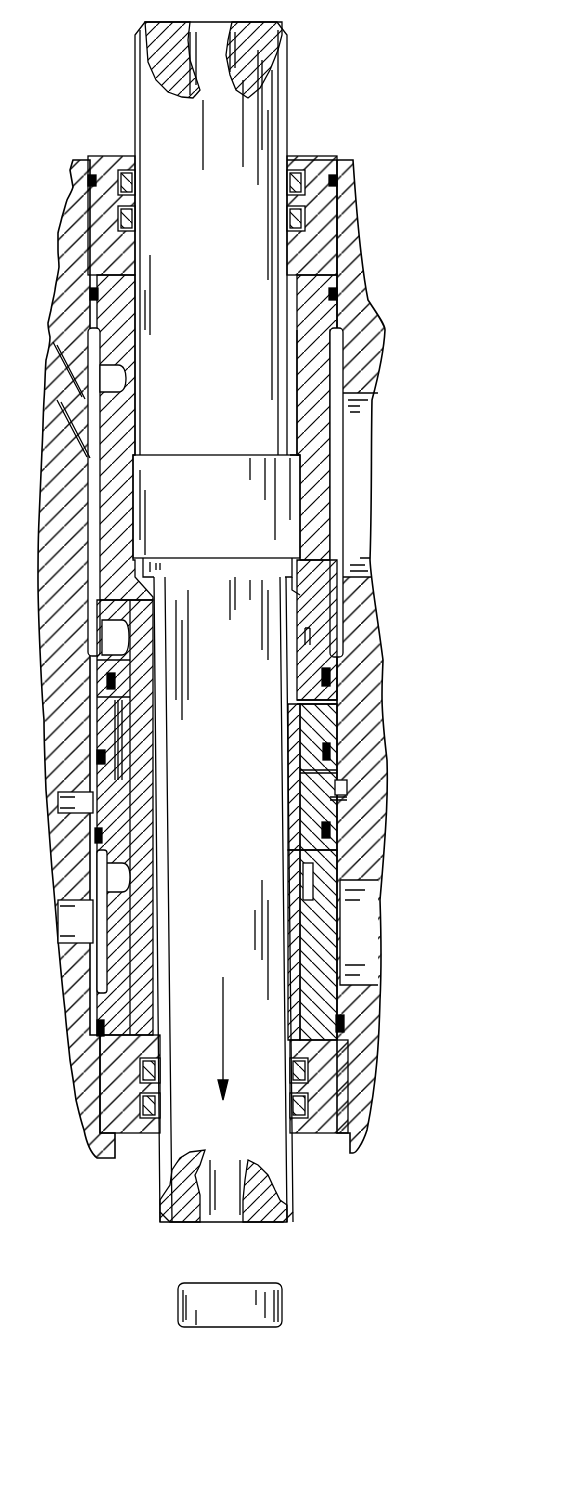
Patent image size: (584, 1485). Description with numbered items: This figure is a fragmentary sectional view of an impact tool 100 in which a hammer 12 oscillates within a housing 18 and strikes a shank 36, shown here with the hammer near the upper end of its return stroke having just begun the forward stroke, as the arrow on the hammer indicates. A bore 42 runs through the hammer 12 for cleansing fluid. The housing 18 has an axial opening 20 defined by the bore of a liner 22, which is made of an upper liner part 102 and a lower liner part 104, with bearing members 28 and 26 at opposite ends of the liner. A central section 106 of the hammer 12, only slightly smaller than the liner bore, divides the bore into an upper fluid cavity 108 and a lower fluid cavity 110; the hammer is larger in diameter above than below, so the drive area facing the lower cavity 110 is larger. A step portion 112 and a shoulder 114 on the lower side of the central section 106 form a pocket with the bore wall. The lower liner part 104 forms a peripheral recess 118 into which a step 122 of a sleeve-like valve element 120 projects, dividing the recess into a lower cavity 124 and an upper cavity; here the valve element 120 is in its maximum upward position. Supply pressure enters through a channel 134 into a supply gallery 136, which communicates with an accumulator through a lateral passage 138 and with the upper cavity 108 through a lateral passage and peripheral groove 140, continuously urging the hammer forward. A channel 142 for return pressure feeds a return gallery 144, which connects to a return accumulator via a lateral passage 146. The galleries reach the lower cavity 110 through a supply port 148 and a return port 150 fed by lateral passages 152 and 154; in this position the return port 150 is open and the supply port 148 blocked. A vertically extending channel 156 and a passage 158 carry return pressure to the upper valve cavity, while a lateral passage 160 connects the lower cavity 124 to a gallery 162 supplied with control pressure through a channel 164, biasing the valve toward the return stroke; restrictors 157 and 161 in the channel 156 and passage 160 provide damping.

The impact tool 100 is at (107, 121).
The hammer 12 is at (273, 123).
The bore 42 is at (228, 70).
The bearing member 28 is at (313, 160).
The housing 18 is at (357, 233).
The lateral passage and peripheral groove 140 is at (110, 377).
The channel 134 is at (73, 398).
The lateral passage 138 is at (346, 405).
The upper fluid cavity 108 is at (297, 427).
The upper liner part 102 is at (325, 472).
The central section 106 is at (285, 515).
The supply gallery 136 is at (92, 500).
The opening 20 is at (292, 586).
The shoulder 114 is at (138, 573).
The step portion 112 is at (222, 565).
The supply port 148 is at (310, 637).
The valve element 120 is at (300, 650).
The lateral passages 152 is at (107, 633).
The passage 158 is at (113, 690).
The step 122 is at (322, 700).
The vertically extending channel 156 is at (117, 722).
The liner 22 is at (325, 727).
The restrictor 157 is at (117, 745).
The lower liner part 104 is at (330, 738).
The lower cavity 124 is at (130, 770).
The recess 118 is at (310, 770).
The gallery 162 is at (347, 787).
The lateral passage 160 is at (345, 798).
The channel 164 is at (65, 803).
The restrictor 161 is at (333, 823).
The lateral passages 154 is at (113, 878).
The return port 150 is at (313, 878).
The lower fluid cavity 110 is at (300, 907).
The channel 142 is at (72, 935).
The lateral passage 146 is at (368, 970).
The return gallery 144 is at (100, 967).
The bearing member 26 is at (326, 1120).
The shank 36 is at (283, 1305).